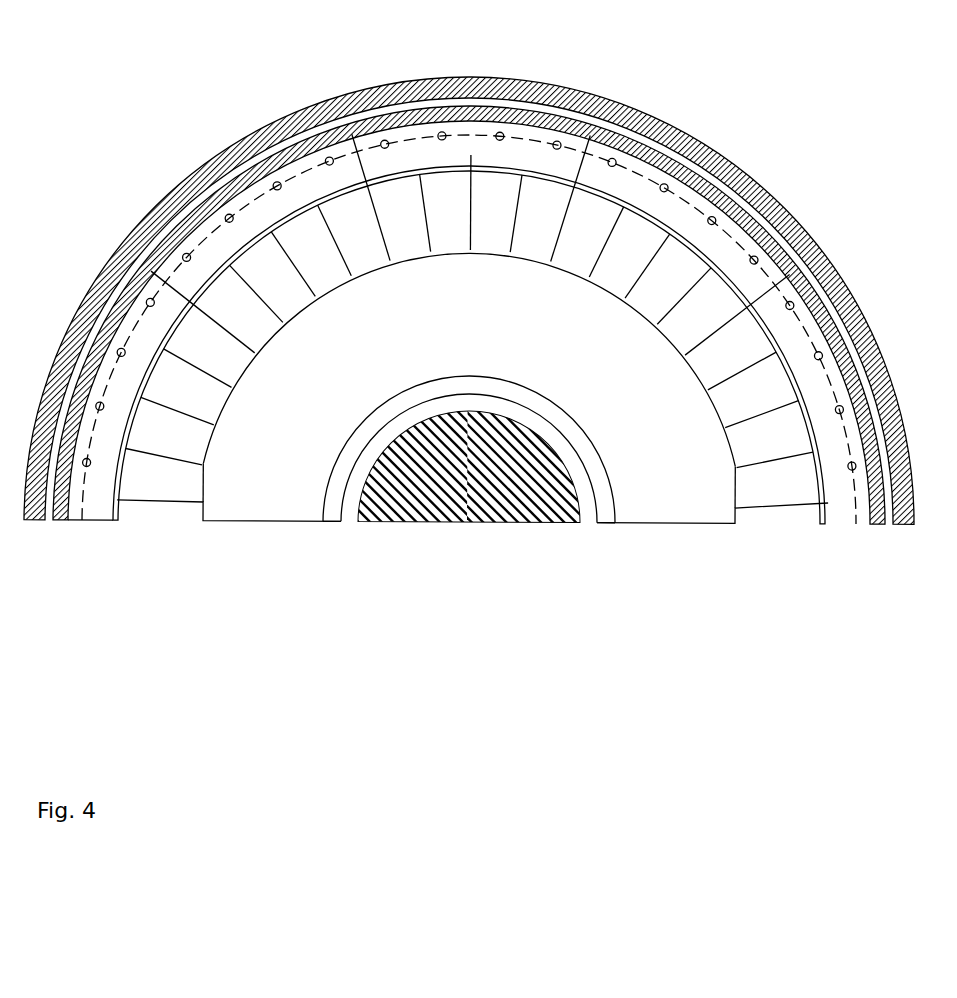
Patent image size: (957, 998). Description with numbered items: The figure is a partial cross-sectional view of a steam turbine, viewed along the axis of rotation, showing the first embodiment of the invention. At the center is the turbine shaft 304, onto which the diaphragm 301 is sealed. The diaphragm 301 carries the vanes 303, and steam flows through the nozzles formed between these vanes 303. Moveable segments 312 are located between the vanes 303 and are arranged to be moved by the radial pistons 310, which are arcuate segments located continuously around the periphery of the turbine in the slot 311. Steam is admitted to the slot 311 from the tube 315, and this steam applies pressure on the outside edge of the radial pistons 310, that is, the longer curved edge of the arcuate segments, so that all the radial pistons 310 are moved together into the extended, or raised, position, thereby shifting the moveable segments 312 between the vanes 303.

The diaphragm 301 is at (263, 522).
The vanes 303 is at (160, 480).
The turbine shaft 304 is at (380, 522).
The radial pistons 310 is at (522, 112).
The slot 311 is at (688, 160).
The moveable segments 312 is at (397, 177).
The tube 315 is at (228, 163).